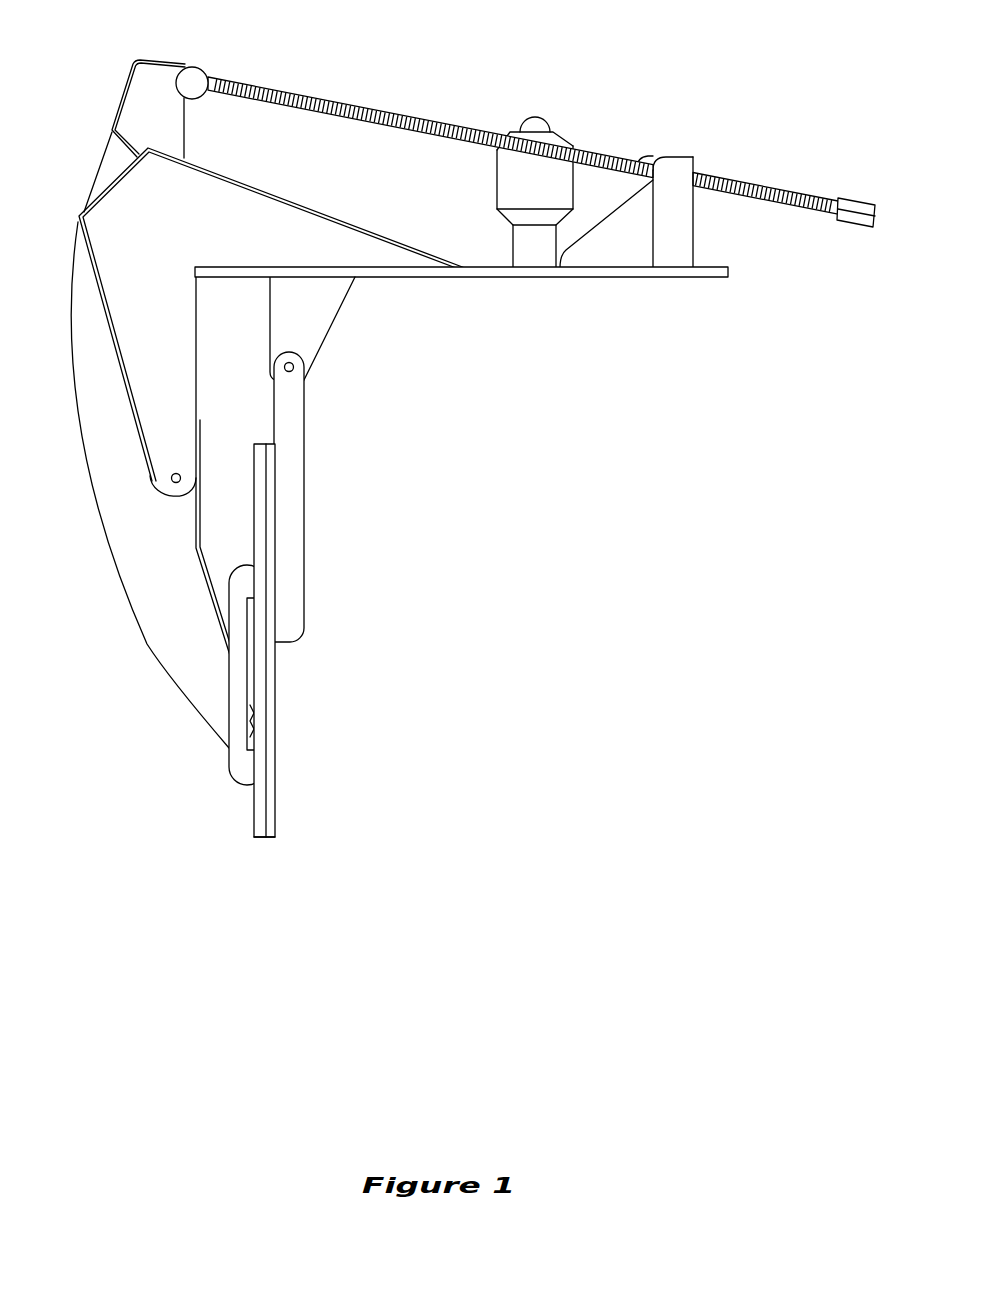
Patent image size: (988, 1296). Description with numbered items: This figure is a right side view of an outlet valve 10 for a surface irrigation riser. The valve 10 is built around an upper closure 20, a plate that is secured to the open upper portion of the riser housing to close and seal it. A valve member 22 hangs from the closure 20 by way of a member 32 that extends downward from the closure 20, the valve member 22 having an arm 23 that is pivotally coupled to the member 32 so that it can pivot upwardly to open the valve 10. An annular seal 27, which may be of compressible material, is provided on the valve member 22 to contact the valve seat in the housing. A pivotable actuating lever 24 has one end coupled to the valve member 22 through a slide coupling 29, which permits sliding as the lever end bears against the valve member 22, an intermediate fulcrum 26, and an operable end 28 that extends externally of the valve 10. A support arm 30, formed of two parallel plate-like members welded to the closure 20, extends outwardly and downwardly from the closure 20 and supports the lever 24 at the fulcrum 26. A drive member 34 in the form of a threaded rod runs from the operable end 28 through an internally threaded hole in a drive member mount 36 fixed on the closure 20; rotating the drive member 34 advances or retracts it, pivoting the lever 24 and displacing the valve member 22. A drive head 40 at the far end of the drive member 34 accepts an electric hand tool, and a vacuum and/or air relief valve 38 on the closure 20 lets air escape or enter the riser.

The outlet valve 10 is at (587, 633).
The upper closure 20 is at (717, 273).
The valve member 22 is at (270, 803).
The arm 23 is at (295, 580).
The actuating lever 24 is at (147, 575).
The fulcrum 26 is at (170, 476).
The annular seal 27 is at (255, 822).
The operable end 28 is at (149, 89).
The slide coupling 29 is at (229, 742).
The support arm 30 is at (93, 219).
The member 32 is at (323, 312).
The drive member 34 is at (367, 112).
The drive member mount 36 is at (682, 163).
The vacuum and/or air relief valve 38 is at (535, 122).
The drive head 40 is at (857, 208).